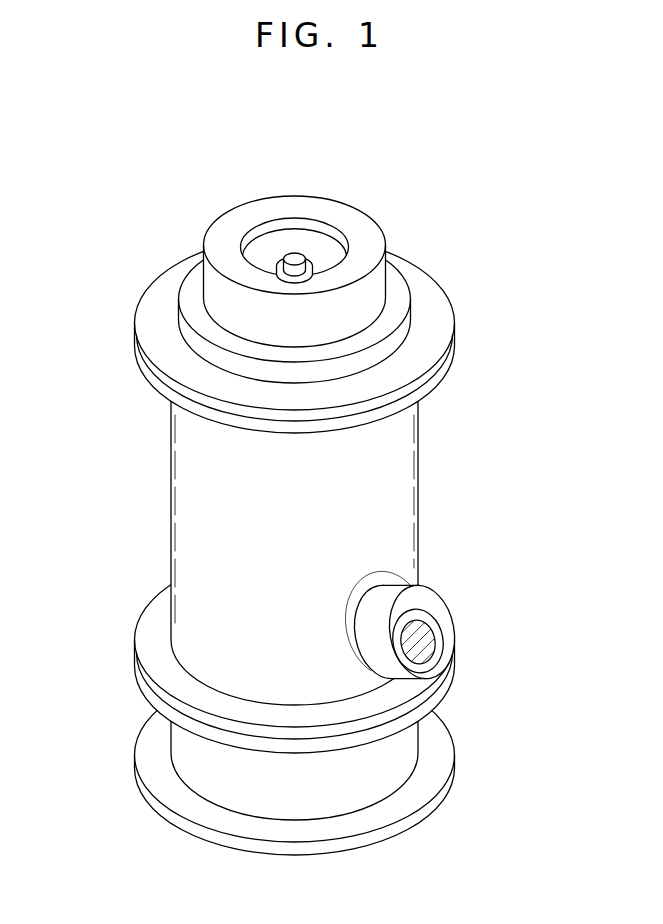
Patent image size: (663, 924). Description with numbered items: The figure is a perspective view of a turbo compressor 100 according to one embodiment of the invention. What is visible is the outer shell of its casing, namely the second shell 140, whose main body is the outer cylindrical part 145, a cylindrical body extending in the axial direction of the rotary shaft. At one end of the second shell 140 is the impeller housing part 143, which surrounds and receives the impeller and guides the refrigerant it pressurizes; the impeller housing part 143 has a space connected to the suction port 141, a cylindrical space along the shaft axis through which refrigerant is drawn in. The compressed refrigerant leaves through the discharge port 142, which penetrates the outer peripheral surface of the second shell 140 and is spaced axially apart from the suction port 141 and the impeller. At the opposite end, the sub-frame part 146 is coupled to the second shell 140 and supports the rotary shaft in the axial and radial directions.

The turbo compressor 100 is at (116, 210).
The second shell 140 is at (170, 506).
The suction port 141 is at (301, 240).
The discharge port 142 is at (417, 638).
The impeller housing part 143 is at (440, 294).
The outer cylindrical part 145 is at (418, 507).
The sub-frame part 146 is at (445, 752).